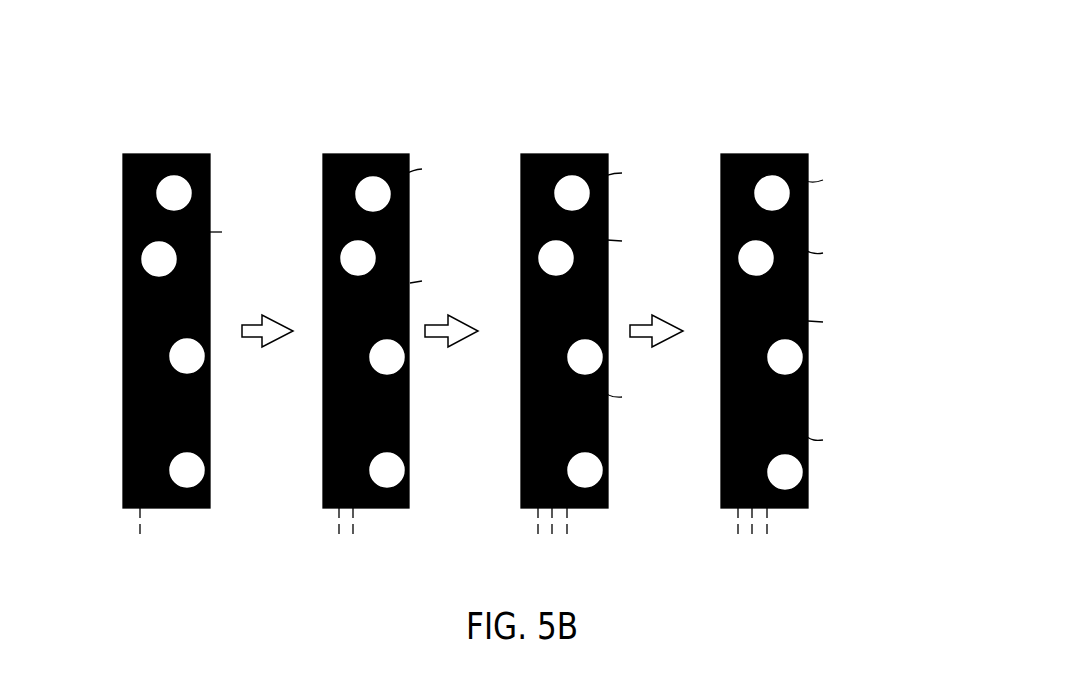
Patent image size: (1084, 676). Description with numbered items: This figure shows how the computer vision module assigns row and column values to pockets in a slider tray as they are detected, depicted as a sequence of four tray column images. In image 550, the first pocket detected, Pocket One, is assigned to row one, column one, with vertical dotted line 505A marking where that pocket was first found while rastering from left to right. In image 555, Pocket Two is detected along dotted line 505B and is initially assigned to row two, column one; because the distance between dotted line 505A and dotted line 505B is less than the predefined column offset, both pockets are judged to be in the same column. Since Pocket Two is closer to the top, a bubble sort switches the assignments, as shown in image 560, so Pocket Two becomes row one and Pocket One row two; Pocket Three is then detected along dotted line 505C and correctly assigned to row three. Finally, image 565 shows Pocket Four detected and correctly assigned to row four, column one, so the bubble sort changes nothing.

The image 550 is at (188, 122).
The image 555 is at (383, 125).
The image 560 is at (620, 132).
The image 565 is at (816, 141).
The dotted line 505A is at (140, 154).
The dotted line 505B is at (353, 154).
The dotted line 505C is at (567, 154).